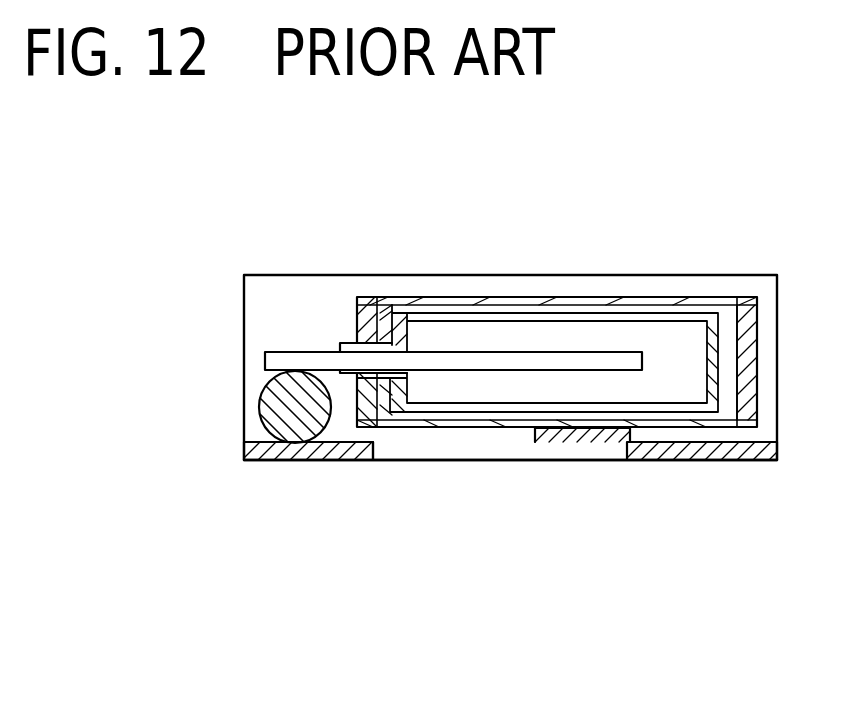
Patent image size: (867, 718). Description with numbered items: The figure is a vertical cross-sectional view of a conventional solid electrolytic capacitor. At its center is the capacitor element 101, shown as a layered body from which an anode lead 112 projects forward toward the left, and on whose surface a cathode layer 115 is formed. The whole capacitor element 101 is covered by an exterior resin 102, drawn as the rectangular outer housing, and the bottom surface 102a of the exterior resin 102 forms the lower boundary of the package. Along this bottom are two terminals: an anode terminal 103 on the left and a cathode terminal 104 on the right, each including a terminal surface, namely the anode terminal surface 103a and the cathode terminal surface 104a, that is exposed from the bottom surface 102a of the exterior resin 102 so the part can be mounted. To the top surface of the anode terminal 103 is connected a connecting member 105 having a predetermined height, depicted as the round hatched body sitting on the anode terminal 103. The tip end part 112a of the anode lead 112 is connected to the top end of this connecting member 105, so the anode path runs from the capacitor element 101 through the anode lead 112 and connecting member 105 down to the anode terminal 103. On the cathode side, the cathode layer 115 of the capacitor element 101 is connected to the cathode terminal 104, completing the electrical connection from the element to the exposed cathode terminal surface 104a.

The capacitor element 101 is at (645, 296).
The exterior resin 102 is at (750, 286).
The bottom surface 102a is at (487, 459).
The anode terminal 103 is at (303, 456).
The anode terminal surface 103a is at (347, 458).
The cathode terminal 104 is at (722, 458).
The cathode terminal surface 104a is at (670, 458).
The connecting member 105 is at (259, 407).
The anode lead 112 is at (495, 363).
The tip end part 112a is at (317, 360).
The cathode layer 115 is at (597, 296).